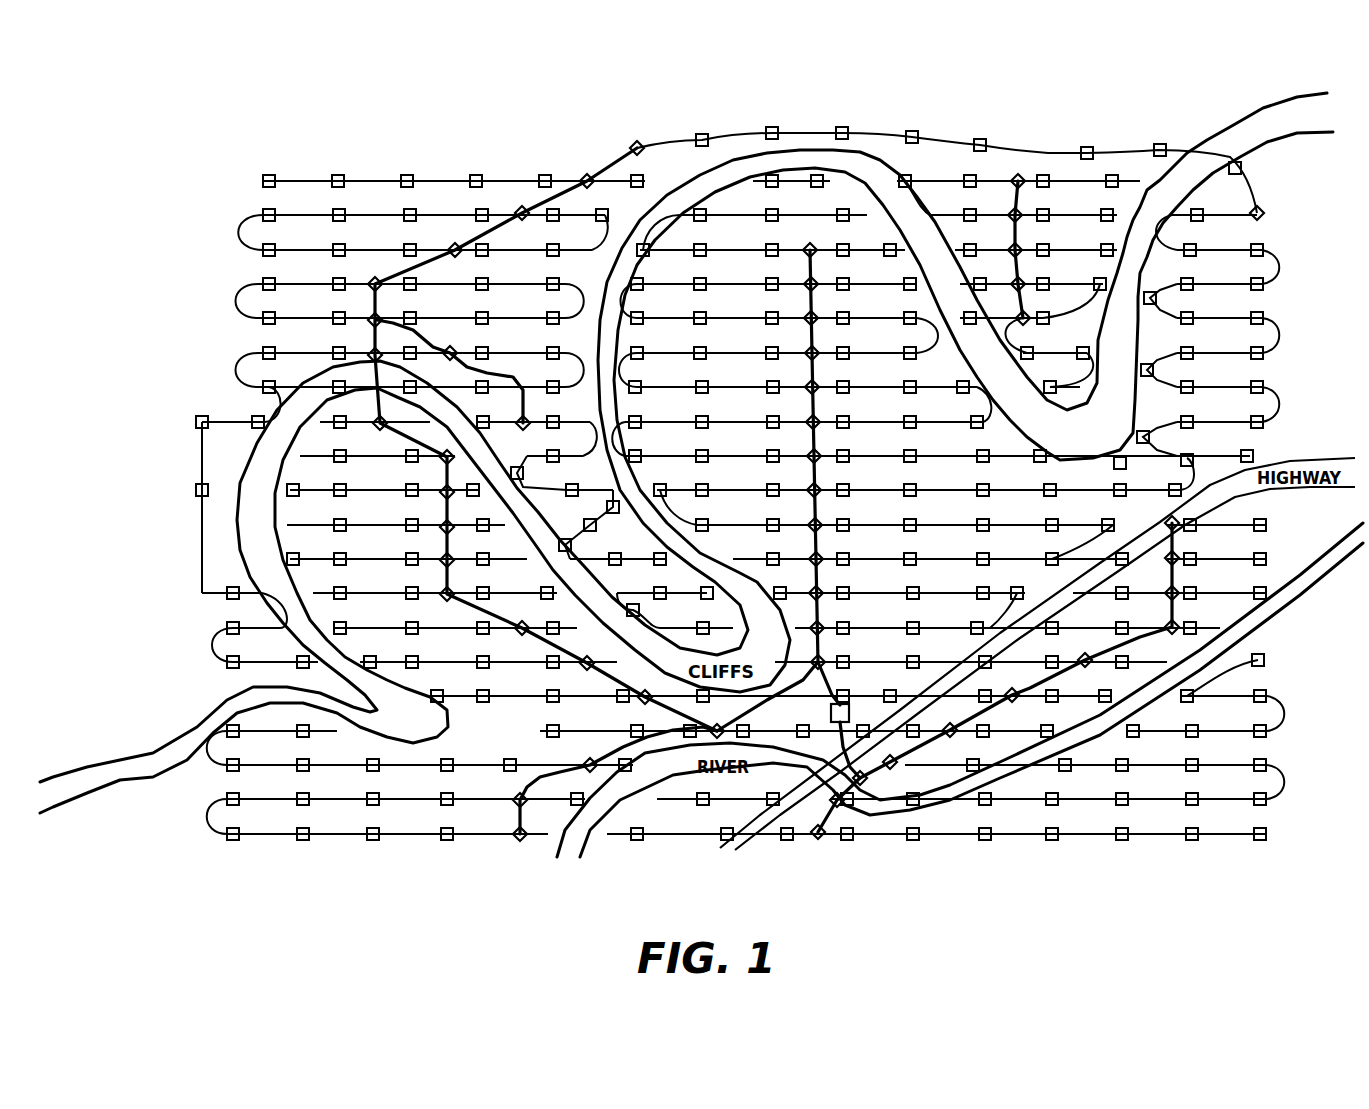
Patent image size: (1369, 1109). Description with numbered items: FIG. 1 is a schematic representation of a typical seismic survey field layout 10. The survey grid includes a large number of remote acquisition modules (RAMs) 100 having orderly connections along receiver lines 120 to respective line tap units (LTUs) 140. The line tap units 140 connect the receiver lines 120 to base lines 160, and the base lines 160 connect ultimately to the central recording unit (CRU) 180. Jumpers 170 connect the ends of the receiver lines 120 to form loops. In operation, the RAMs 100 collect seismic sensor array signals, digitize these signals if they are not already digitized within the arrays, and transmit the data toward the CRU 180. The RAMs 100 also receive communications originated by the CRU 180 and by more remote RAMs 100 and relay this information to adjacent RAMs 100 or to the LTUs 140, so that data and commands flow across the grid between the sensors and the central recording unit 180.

The seismic survey layout 10 is at (770, 133).
The remote acquisition module 100 is at (265, 177).
The receiver line 120 is at (862, 135).
The line tap unit 140 is at (456, 247).
The base line 160 is at (540, 210).
The jumper 170 is at (246, 235).
The central recording unit 180 is at (850, 715).